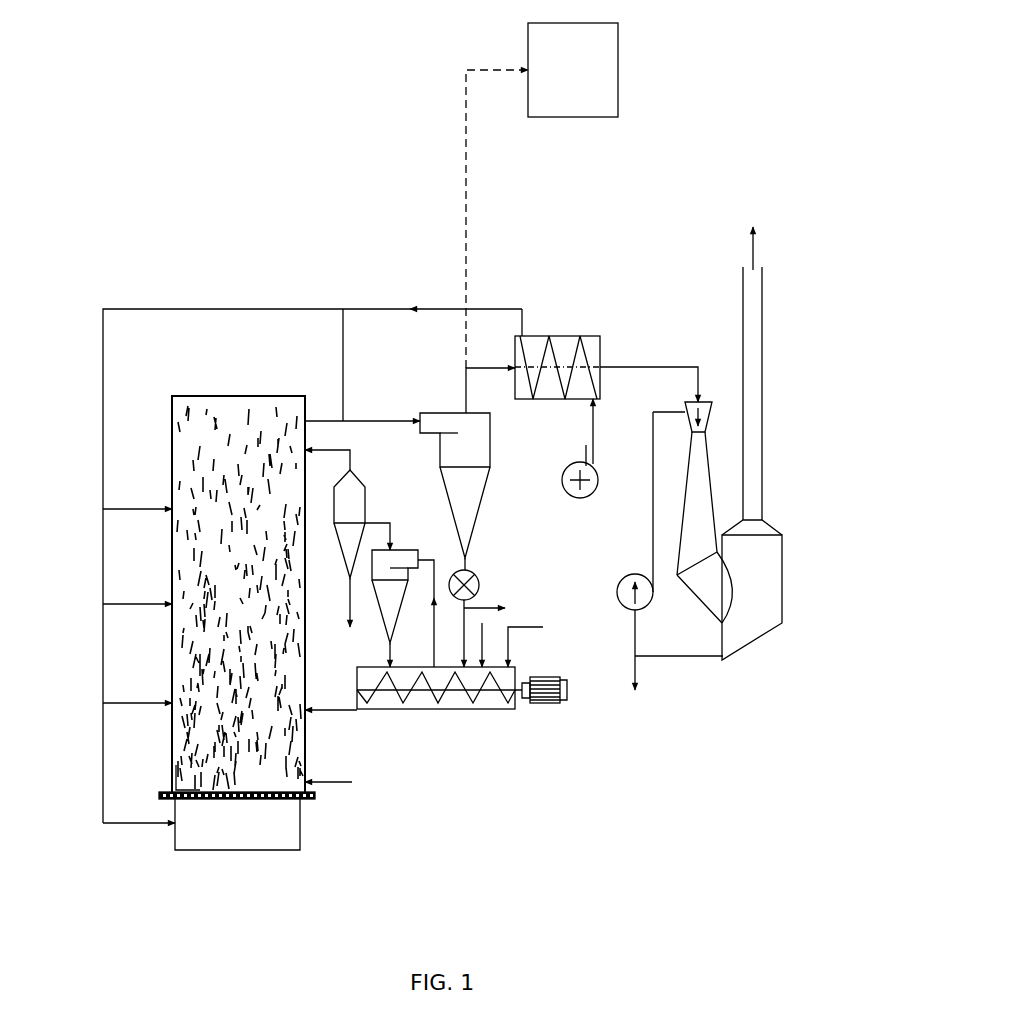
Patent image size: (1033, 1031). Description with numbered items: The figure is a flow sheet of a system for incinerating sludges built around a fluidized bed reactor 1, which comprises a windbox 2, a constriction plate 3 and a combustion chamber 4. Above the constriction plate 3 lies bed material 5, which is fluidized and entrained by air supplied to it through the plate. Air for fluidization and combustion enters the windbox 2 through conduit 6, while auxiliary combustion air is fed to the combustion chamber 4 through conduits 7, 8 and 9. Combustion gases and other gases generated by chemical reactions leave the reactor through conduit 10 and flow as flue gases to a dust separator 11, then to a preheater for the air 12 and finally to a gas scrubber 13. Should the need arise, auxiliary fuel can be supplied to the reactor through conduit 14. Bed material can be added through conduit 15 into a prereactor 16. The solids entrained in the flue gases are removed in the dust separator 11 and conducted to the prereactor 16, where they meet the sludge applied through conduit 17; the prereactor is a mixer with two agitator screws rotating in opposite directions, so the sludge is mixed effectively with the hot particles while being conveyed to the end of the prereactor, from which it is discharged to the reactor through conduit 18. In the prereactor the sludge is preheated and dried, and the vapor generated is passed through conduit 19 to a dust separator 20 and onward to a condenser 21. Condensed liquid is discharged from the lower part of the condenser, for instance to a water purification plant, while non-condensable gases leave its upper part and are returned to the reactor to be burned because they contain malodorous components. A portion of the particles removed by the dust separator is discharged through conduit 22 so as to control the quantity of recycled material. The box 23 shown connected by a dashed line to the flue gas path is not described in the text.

The fluidized bed reactor 1 is at (308, 732).
The windbox 2 is at (200, 840).
The constriction plate 3 is at (262, 799).
The combustion chamber 4 is at (203, 552).
The bed material 5 is at (183, 773).
The conduit 6 is at (145, 823).
The conduit 7 is at (128, 703).
The conduit 8 is at (140, 604).
The conduit 9 is at (130, 509).
The conduit 10 is at (343, 415).
The dust separator 11 is at (436, 413).
The preheater for the air 12 is at (533, 343).
The gas scrubber 13 is at (760, 553).
The conduit 14 is at (346, 782).
The conduit 15 is at (482, 623).
The prereactor 16 is at (460, 709).
The conduit 17 is at (520, 628).
The conduit 18 is at (343, 710).
The conduit 19 is at (427, 560).
The dust separator 20 is at (390, 557).
The condenser 21 is at (352, 495).
The conduit 22 is at (477, 602).
The control unit 23 is at (600, 92).